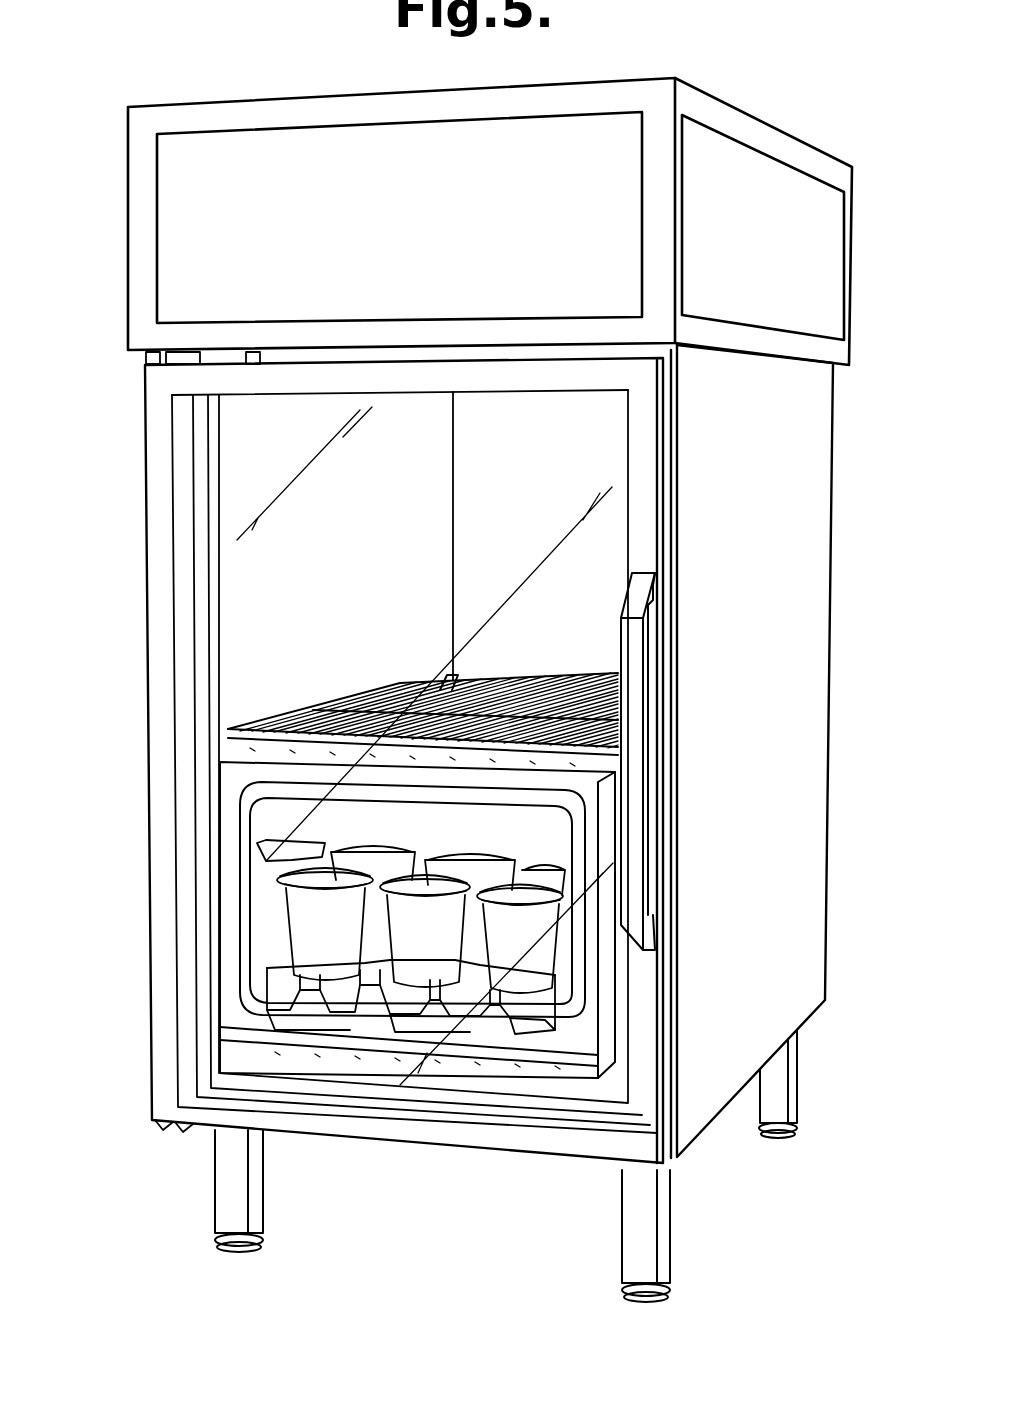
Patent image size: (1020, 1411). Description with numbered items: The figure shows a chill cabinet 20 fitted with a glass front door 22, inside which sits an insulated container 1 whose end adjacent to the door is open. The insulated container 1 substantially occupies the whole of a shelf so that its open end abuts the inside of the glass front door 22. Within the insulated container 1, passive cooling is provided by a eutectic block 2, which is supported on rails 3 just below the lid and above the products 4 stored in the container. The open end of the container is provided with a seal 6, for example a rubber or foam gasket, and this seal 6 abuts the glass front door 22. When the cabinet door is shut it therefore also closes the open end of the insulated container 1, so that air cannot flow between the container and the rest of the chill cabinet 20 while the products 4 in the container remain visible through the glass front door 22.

The insulated container 1 is at (222, 773).
The eutectic block 2 is at (272, 816).
The rails 3 is at (265, 845).
The products 4 is at (518, 973).
The seal 6 is at (558, 1048).
The chill cabinet 20 is at (765, 723).
The glass front door 22 is at (418, 555).